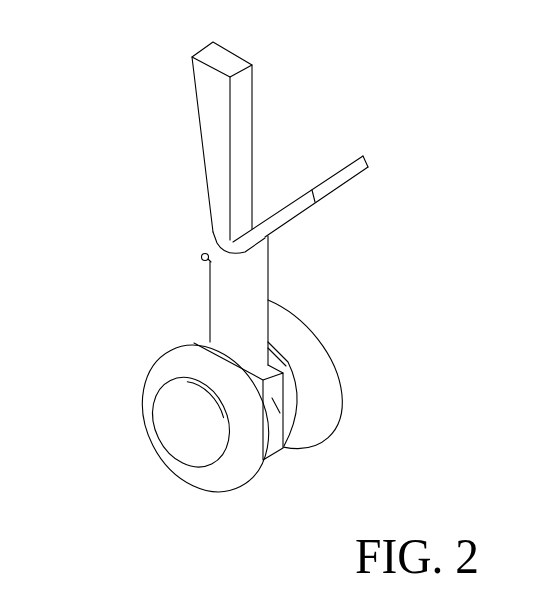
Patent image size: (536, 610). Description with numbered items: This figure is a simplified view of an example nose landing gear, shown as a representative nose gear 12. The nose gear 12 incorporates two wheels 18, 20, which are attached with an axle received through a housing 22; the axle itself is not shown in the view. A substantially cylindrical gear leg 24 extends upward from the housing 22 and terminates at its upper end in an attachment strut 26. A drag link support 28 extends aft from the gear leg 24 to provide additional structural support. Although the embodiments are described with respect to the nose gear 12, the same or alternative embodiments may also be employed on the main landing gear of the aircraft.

The nose gear 12 is at (247, 278).
The wheel 18 is at (155, 368).
The wheel 20 is at (302, 332).
The housing 22 is at (305, 448).
The gear leg 24 is at (222, 302).
The attachment strut 26 is at (213, 102).
The drag link support 28 is at (332, 175).